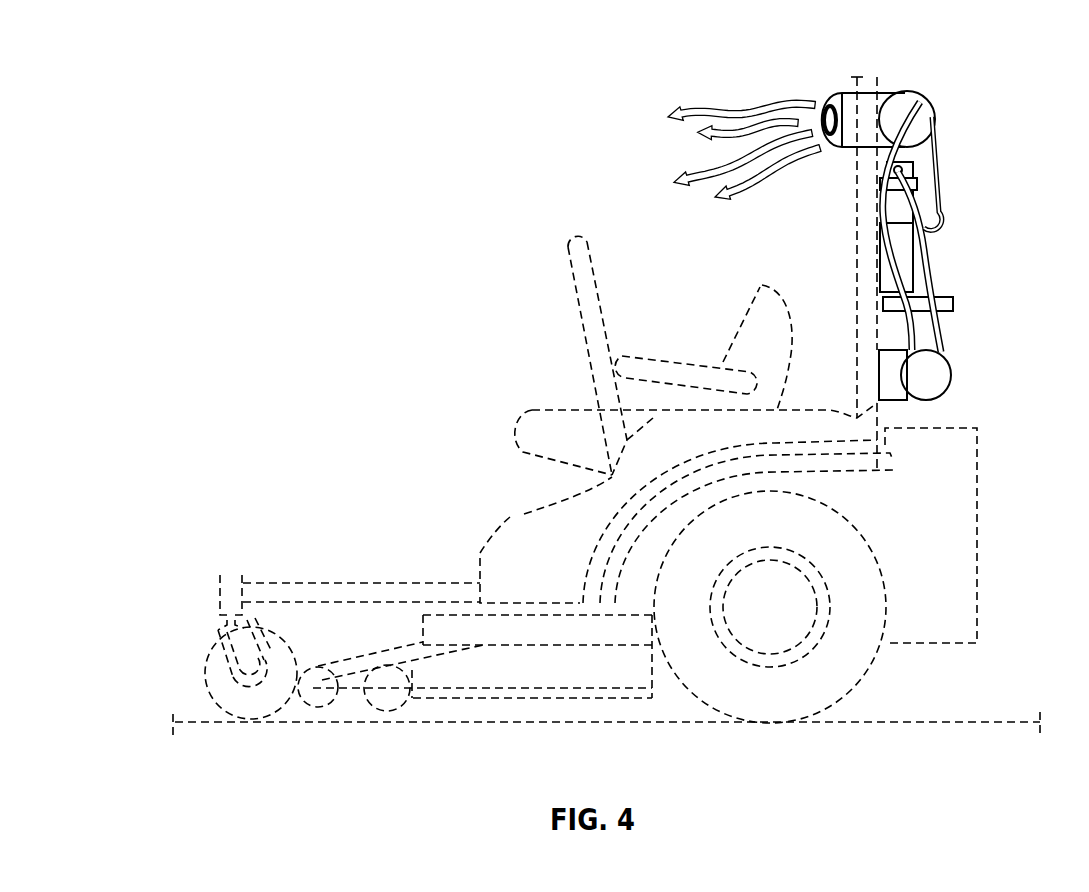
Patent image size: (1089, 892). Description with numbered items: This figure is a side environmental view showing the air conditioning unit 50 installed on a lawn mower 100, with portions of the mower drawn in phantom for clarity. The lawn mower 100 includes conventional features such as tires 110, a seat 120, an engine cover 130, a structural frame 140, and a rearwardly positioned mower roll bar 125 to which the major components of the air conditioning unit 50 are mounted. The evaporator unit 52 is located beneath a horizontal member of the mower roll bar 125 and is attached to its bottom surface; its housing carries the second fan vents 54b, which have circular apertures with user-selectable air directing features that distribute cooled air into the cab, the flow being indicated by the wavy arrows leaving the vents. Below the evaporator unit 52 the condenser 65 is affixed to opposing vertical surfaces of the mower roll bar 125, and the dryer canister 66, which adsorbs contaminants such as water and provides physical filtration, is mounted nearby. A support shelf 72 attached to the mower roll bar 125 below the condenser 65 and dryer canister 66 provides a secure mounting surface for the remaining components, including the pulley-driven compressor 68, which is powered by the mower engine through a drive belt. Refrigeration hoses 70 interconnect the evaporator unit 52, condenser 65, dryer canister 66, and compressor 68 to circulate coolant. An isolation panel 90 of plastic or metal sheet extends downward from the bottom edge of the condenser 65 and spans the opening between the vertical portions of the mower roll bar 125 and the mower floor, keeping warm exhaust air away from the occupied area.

The air conditioning unit 50 is at (992, 107).
The evaporator unit 52 is at (890, 118).
The second fan vents 54b is at (822, 118).
The mower roll bar 125 is at (862, 80).
The condenser 65 is at (898, 210).
The dryer canister 66 is at (880, 237).
The refrigeration hoses 70 is at (905, 258).
The support shelf 72 is at (890, 303).
The pulley-driven compressor 68 is at (893, 363).
The isolation panel 90 is at (858, 285).
The lawn mower 100 is at (512, 518).
The tires 110 is at (843, 519).
The seat 120 is at (760, 287).
The engine cover 130 is at (977, 537).
The structural frame 140 is at (255, 585).